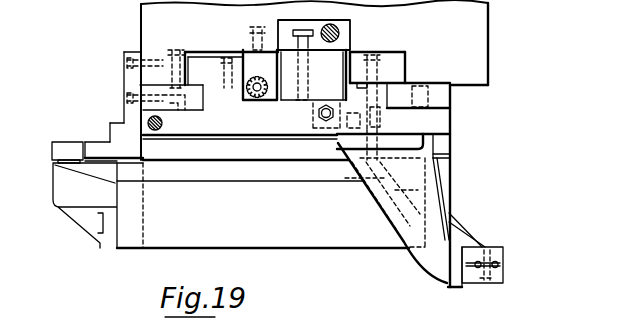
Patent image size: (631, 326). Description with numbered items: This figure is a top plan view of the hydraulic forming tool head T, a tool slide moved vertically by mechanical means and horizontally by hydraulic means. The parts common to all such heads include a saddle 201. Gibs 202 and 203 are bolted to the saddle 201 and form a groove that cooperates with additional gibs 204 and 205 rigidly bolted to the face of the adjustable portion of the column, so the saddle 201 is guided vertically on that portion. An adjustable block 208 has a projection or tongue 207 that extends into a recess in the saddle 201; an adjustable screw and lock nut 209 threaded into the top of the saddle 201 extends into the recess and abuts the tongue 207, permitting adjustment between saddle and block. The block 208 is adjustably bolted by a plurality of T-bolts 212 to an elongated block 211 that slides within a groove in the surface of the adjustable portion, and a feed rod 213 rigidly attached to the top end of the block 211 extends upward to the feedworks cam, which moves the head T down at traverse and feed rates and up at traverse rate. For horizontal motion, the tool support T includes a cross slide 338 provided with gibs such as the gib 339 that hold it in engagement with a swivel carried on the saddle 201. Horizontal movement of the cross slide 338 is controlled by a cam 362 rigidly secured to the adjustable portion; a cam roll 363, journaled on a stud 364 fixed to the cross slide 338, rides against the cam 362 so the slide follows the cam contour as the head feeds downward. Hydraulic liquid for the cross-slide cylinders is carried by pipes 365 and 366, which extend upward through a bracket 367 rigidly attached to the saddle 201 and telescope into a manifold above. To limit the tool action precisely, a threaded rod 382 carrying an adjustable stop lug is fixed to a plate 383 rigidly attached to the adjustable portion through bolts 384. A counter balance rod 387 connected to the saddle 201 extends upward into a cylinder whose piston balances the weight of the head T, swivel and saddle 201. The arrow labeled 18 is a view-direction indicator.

The saddle 201 is at (441, 116).
The gib 202 is at (200, 63).
The gib 203 is at (388, 60).
The gib 204 is at (192, 106).
The gib 205 is at (446, 96).
The projection 207 is at (287, 148).
The adjustable block 208 is at (293, 101).
The adjustable screw and lock nut 209 is at (325, 120).
The elongated block 211 is at (278, 25).
The T-bolts 212 is at (308, 28).
The feed rod 213 is at (340, 32).
The cross slide 338 is at (128, 238).
The gib 339 is at (197, 172).
The cam 362 is at (88, 143).
The cam roll 363 is at (52, 153).
The stud 364 is at (72, 142).
The pipe 365 is at (477, 268).
The pipe 366 is at (497, 285).
The bracket 367 is at (505, 255).
The threaded rod 382 is at (261, 101).
The plate 383 is at (250, 73).
The bolts 384 is at (253, 44).
The counter balance rod 387 is at (158, 130).
The section line 18 is at (320, 262).
The tool head T is at (280, 255).